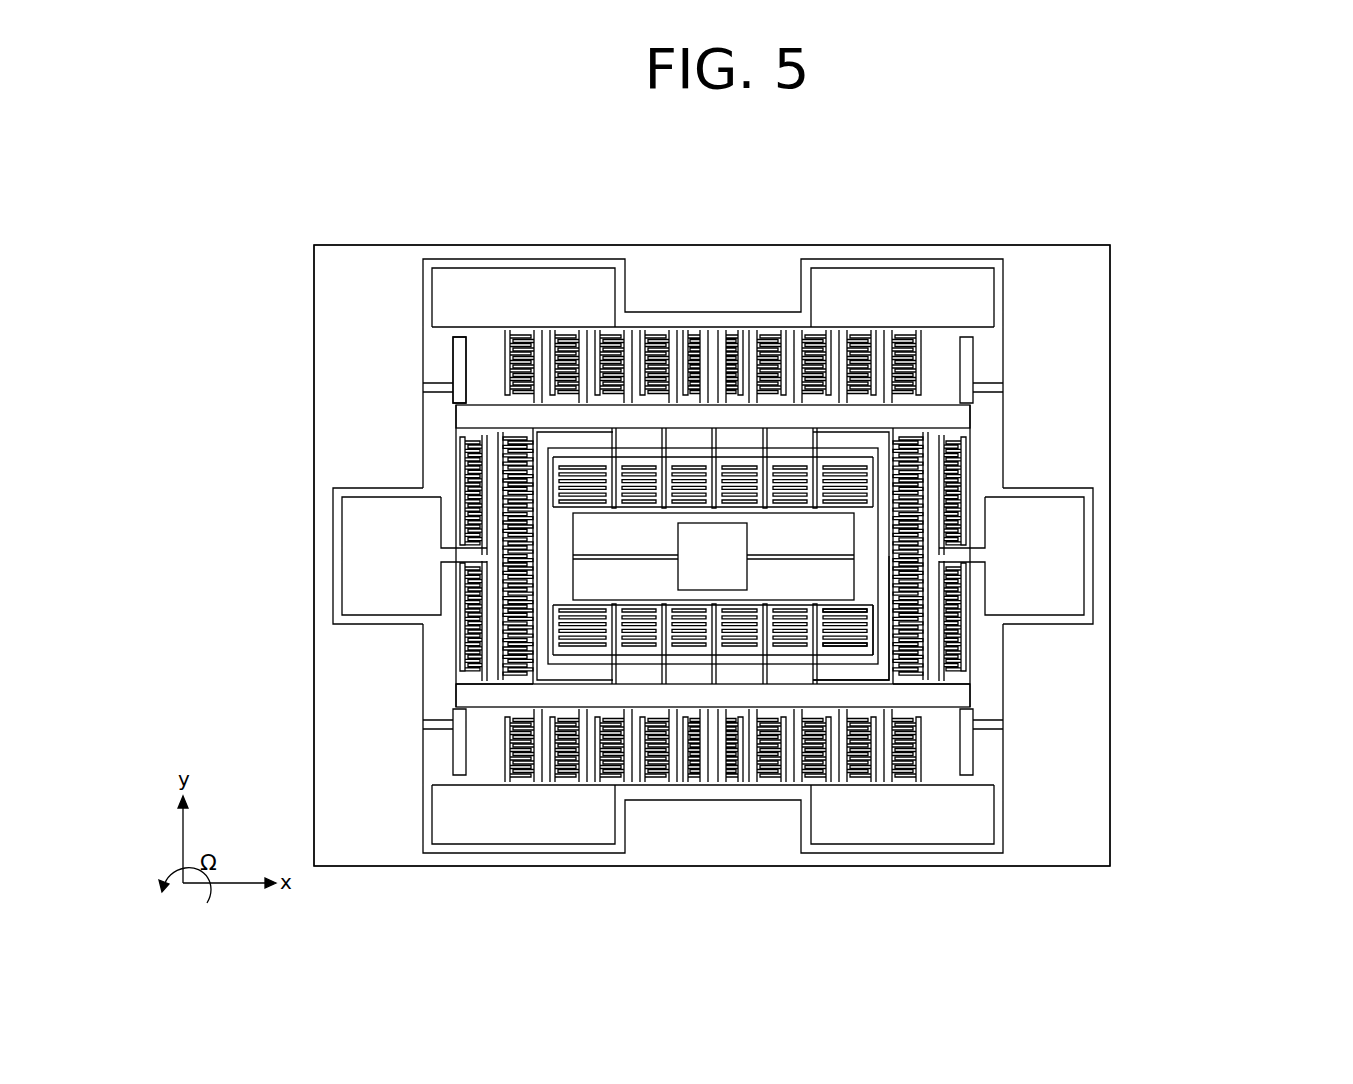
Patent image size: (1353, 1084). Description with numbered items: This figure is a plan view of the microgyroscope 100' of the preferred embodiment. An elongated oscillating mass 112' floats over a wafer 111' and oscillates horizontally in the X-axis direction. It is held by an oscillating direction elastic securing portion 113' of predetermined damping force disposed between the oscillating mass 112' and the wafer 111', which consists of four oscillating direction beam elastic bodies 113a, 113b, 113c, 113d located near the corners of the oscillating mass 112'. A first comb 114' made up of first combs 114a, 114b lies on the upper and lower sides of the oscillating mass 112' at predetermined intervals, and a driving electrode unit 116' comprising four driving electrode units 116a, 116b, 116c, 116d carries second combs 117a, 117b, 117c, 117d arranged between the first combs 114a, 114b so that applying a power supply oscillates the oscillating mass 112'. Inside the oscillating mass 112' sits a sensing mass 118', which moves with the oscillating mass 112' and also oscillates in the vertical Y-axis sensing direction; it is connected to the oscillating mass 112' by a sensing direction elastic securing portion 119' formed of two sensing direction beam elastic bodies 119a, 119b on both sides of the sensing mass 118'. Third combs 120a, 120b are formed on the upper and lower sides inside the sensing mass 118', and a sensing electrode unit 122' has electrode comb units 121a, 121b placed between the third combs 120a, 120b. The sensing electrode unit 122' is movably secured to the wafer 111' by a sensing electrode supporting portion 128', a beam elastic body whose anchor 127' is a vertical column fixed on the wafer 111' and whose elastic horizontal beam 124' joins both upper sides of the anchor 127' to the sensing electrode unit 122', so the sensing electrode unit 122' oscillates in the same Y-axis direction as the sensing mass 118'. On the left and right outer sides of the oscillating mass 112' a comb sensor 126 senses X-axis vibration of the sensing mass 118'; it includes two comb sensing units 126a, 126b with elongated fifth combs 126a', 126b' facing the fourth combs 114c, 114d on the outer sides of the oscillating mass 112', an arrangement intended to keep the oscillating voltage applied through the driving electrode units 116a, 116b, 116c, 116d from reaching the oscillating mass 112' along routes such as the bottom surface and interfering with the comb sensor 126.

The microgyroscope 100' is at (642, 528).
The wafer 111' is at (777, 555).
The oscillating mass 112' is at (601, 556).
The oscillating direction elastic securing portion 113' is at (358, 379).
The oscillating direction beam elastic body 113a is at (963, 360).
The oscillating direction beam elastic body 113b is at (965, 765).
The oscillating direction beam elastic body 113c is at (463, 352).
The oscillating direction beam elastic body 113d is at (460, 770).
The first comb 114' is at (808, 826).
The first comb 114a is at (885, 330).
The first comb 114b is at (892, 709).
The fourth comb 114c is at (955, 590).
The fourth comb 114d is at (458, 655).
The driving electrode unit 116' is at (873, 783).
The driving electrode unit 116a is at (838, 280).
The driving electrode unit 116b is at (895, 836).
The driving electrode unit 116c is at (485, 277).
The driving electrode unit 116d is at (558, 827).
The second comb 117a is at (923, 331).
The second comb 117b is at (947, 778).
The second comb 117c is at (507, 357).
The second comb 117d is at (503, 765).
The sensing mass 118' is at (941, 623).
The sensing direction elastic securing portion 119' is at (996, 572).
The sensing direction beam elastic body 119a is at (859, 672).
The sensing direction beam elastic body 119b is at (462, 668).
The third comb 120a is at (660, 468).
The third comb 120b is at (672, 650).
The electrode comb unit 121a is at (792, 468).
The electrode comb unit 121b is at (806, 648).
The sensing electrode unit 122' is at (804, 556).
The elastic horizontal beam 124' is at (713, 556).
The comb sensor 126 is at (1090, 505).
The comb sensing unit 126a is at (1089, 556).
The comb sensing unit 126b is at (335, 556).
The fifth comb 126a' is at (1080, 547).
The fifth comb 126b' is at (344, 556).
The anchor 127' is at (713, 575).
The sensing electrode supporting portion 128' is at (662, 556).